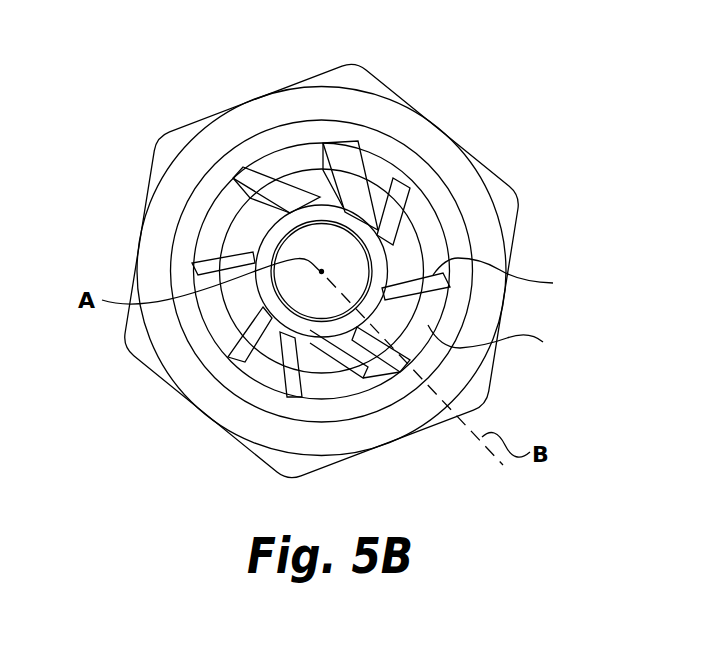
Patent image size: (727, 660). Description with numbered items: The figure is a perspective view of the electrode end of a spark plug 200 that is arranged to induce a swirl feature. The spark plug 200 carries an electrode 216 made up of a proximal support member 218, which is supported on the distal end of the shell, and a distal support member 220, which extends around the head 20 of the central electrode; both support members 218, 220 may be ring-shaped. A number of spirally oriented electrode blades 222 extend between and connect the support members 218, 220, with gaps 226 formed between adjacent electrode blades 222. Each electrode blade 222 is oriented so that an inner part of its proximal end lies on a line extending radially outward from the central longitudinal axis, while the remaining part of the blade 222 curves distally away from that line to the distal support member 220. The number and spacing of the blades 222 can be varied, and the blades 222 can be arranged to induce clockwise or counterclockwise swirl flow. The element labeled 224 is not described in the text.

The head 20 is at (320, 240).
The spark plug 200 is at (478, 103).
The electrode 216 is at (180, 245).
The proximal support member 218 is at (212, 218).
The distal support member 220 is at (300, 218).
The electrode blades 222 is at (255, 175).
The blade tip 224 is at (511, 278).
The gaps 226 is at (502, 341).